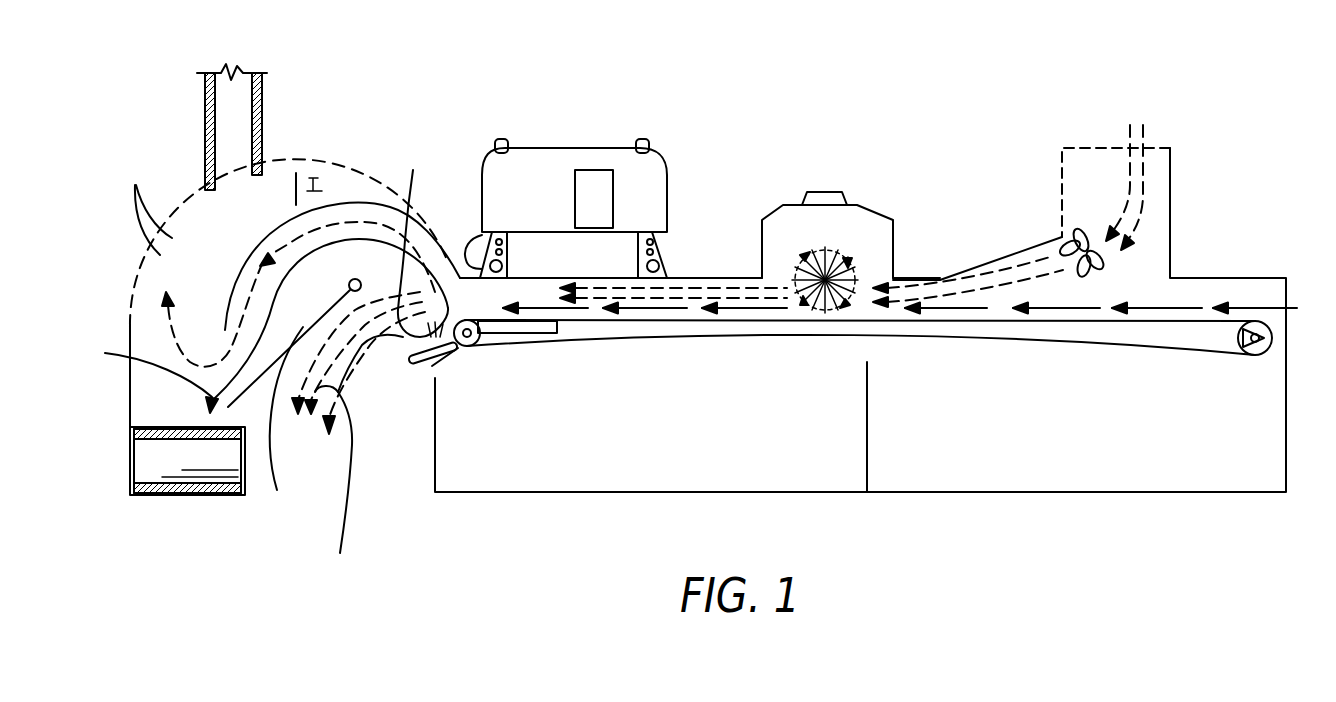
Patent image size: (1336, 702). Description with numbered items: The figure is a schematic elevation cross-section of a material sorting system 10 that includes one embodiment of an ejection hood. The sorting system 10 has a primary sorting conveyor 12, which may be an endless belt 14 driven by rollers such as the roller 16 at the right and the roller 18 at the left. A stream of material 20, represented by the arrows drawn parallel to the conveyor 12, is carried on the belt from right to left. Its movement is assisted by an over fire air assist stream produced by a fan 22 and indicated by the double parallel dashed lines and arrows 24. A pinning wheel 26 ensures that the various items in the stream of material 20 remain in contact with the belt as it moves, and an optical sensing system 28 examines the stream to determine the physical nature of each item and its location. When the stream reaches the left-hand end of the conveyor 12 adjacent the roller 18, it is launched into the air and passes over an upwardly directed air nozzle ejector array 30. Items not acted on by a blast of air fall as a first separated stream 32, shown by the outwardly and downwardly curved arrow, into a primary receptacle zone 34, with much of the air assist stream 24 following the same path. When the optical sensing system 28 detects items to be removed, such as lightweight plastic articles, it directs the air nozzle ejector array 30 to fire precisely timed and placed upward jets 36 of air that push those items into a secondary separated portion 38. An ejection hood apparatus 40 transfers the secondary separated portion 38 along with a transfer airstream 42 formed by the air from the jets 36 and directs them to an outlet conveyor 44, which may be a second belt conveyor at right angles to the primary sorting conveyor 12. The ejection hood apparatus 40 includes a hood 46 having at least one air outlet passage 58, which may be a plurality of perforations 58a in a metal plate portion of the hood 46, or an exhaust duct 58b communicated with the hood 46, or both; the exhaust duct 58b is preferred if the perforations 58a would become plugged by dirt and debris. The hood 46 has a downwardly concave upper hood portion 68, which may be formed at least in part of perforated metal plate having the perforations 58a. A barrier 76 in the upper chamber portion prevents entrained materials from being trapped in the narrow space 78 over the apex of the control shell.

The material sorting system 10 is at (860, 279).
The primary sorting conveyor 12 is at (860, 320).
The endless belt 14 is at (1103, 318).
The roller 16 is at (1262, 341).
The roller 18 is at (468, 340).
The stream of material 20 is at (677, 306).
The fan 22 is at (1073, 232).
The air assist stream 24 is at (723, 287).
The pinning wheel 26 is at (842, 248).
The optical sensing system 28 is at (556, 158).
The air nozzle ejector array 30 is at (438, 360).
The first separated stream 32 is at (315, 433).
The primary receptacle zone 34 is at (387, 477).
The jets of air 36 is at (423, 239).
The secondary separated portion 38 is at (463, 160).
The ejection hood apparatus 40 is at (177, 98).
The transfer airstream 42 is at (370, 222).
The outlet conveyor 44 is at (177, 427).
The hood 46 is at (148, 181).
The air outlet passage 58 is at (228, 104).
The perforations 58a is at (135, 185).
The exhaust duct 58b is at (243, 70).
The downwardly concave upper hood portion 68 is at (197, 193).
The barrier 76 is at (277, 172).
The narrow space 78 is at (313, 178).